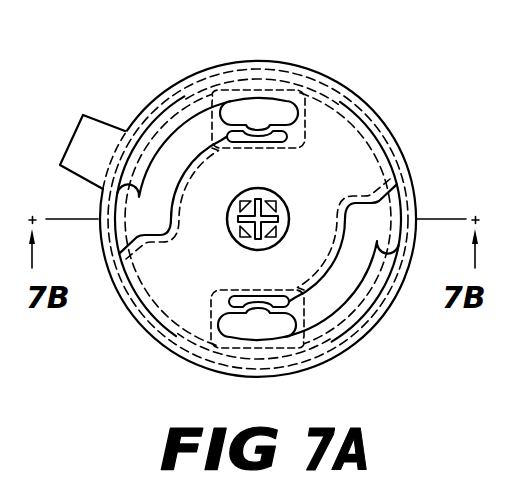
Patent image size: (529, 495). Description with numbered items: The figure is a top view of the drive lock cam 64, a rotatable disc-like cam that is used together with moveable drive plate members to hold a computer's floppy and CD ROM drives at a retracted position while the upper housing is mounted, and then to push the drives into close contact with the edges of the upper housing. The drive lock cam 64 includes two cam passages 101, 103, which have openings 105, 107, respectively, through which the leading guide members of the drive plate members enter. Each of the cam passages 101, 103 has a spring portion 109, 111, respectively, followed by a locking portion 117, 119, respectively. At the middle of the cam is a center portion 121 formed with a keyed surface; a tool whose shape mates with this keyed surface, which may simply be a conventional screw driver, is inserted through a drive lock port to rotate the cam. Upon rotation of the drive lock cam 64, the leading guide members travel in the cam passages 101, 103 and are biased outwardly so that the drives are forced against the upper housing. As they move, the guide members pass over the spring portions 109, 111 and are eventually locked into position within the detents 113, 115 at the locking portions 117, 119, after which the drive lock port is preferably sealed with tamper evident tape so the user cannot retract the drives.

The drive lock cam 64 is at (370, 76).
The cam passage 101 is at (195, 134).
The cam passage 103 is at (340, 282).
The opening 105 is at (132, 222).
The opening 107 is at (382, 222).
The spring portion 109 is at (244, 125).
The spring portion 111 is at (272, 313).
The detent 113 is at (258, 125).
The detent 115 is at (258, 313).
The locking portion 117 is at (280, 142).
The locking portion 119 is at (253, 305).
The center portion 121 is at (277, 212).